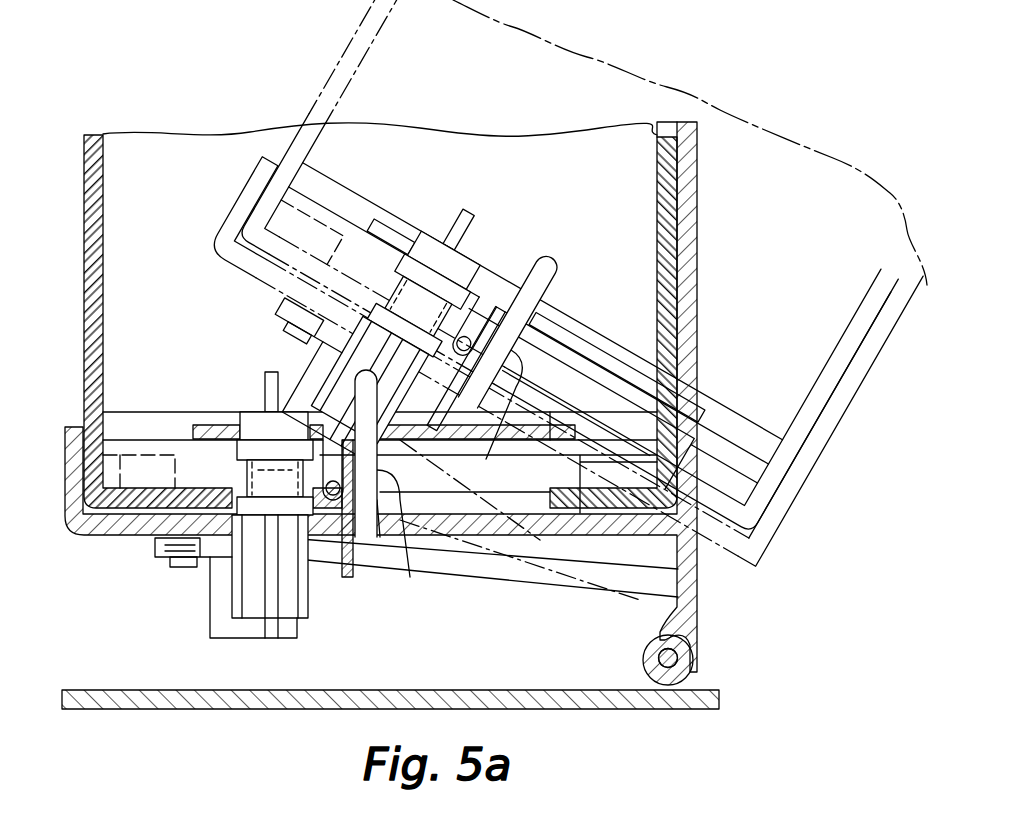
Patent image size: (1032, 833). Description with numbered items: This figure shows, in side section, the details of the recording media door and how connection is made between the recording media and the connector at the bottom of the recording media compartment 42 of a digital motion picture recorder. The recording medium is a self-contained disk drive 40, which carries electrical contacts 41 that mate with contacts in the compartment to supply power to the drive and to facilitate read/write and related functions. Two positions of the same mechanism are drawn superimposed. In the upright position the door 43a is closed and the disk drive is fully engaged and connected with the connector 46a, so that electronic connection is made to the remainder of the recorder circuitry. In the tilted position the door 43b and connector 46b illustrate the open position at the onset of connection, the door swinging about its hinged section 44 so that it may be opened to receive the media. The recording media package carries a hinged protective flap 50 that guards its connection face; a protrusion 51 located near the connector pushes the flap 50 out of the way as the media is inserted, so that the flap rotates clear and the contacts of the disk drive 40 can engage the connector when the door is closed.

The disk drive 40 is at (88, 165).
The electrical contact 41 is at (210, 438).
The recording media compartment 42 is at (598, 668).
The door (closed position) 43a is at (698, 228).
The door (open position) 43b is at (838, 418).
The hinged section 44 is at (694, 666).
The connector (engaged position) 46a is at (240, 478).
The connector (open position) 46b is at (340, 300).
The hinged protective flap 50 is at (350, 575).
The protrusion 51 is at (383, 490).